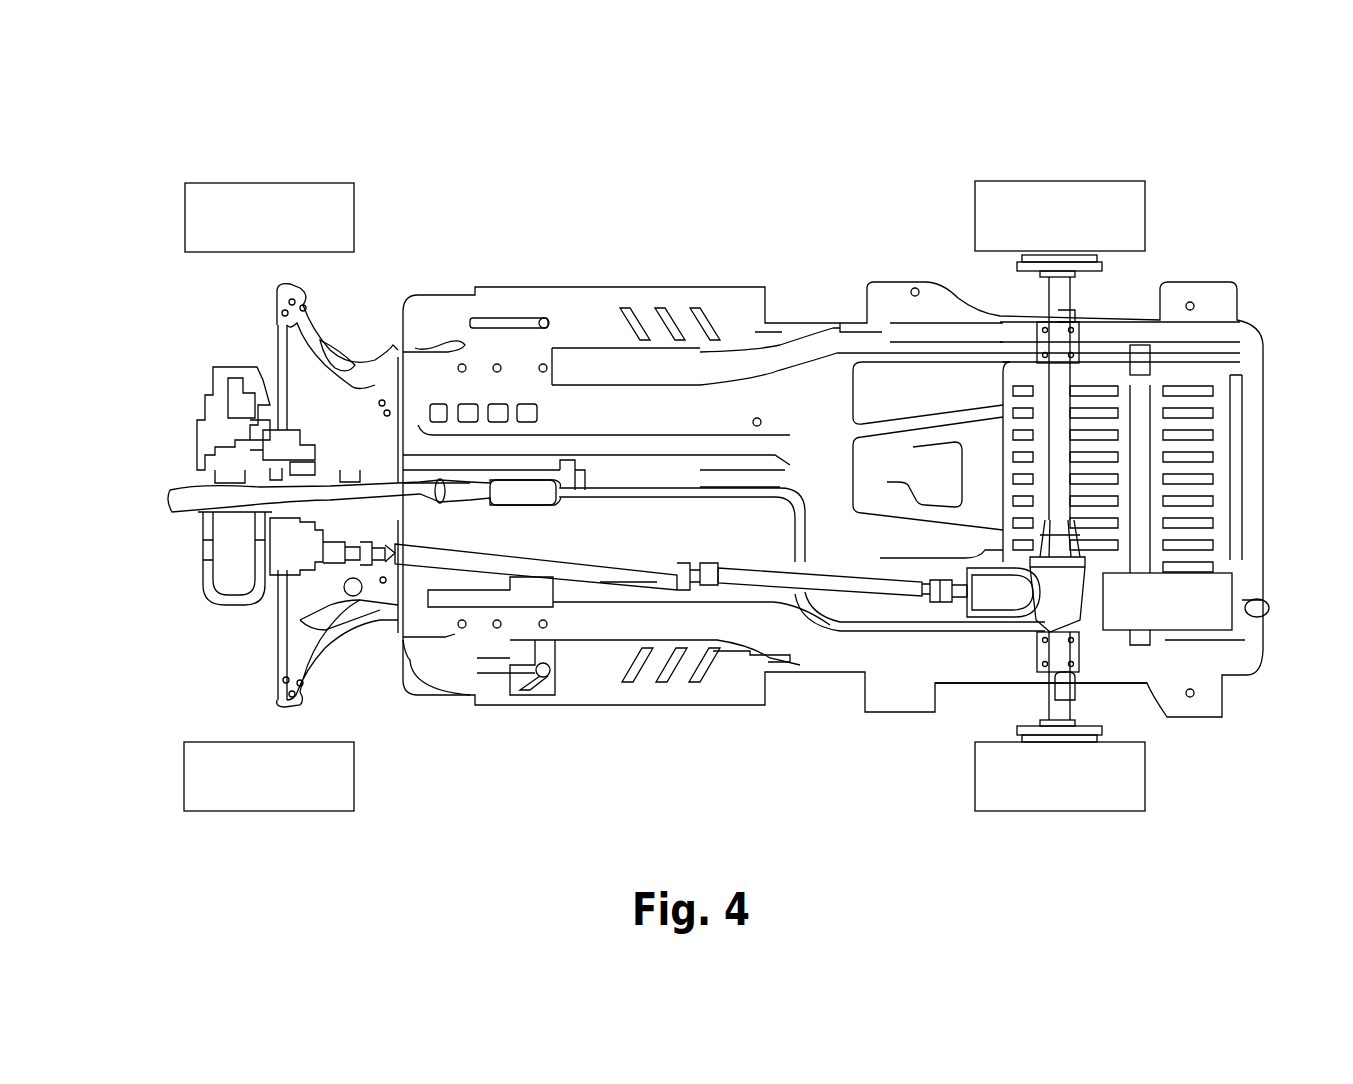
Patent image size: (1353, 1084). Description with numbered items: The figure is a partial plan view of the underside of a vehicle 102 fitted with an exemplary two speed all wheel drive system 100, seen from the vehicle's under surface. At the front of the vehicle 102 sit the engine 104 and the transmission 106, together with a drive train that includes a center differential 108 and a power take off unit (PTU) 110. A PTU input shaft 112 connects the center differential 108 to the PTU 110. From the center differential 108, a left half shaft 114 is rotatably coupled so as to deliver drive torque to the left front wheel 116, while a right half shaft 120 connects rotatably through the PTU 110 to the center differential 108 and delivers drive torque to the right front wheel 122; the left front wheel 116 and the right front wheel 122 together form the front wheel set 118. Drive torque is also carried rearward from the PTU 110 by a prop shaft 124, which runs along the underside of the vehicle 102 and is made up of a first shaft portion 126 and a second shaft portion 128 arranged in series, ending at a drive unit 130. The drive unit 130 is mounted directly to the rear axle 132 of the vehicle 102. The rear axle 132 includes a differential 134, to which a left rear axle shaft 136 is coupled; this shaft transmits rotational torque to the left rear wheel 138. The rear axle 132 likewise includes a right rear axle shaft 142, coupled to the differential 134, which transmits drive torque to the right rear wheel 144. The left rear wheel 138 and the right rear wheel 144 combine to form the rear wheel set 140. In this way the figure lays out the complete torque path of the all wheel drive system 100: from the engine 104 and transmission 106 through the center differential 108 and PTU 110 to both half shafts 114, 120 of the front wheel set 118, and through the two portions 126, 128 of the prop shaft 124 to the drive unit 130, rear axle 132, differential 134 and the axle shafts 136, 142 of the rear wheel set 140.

The two speed all wheel drive system 100 is at (516, 270).
The vehicle 102 is at (748, 298).
The engine 104 is at (230, 575).
The transmission 106 is at (228, 392).
The center differential 108 is at (285, 435).
The power take off unit (PTU) 110 is at (280, 570).
The PTU input shaft 112 is at (275, 487).
The left half shaft 114 is at (283, 360).
The left front wheel 116 is at (292, 200).
The front wheel set 118 is at (188, 178).
The right half shaft 120 is at (275, 640).
The right front wheel 122 is at (318, 800).
The prop shaft 124 is at (890, 587).
The first shaft portion 126 is at (580, 556).
The second shaft portion 128 is at (766, 564).
The drive unit 130 is at (982, 600).
The rear axle 132 is at (1060, 505).
The differential 134 is at (1067, 598).
The left rear axle shaft 136 is at (1055, 300).
The left rear wheel 138 is at (1047, 193).
The rear wheel set 140 is at (1120, 172).
The right rear axle shaft 142 is at (1060, 708).
The right rear wheel 144 is at (1122, 793).